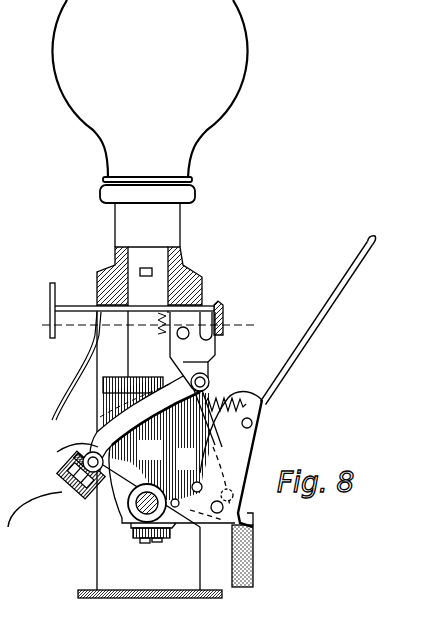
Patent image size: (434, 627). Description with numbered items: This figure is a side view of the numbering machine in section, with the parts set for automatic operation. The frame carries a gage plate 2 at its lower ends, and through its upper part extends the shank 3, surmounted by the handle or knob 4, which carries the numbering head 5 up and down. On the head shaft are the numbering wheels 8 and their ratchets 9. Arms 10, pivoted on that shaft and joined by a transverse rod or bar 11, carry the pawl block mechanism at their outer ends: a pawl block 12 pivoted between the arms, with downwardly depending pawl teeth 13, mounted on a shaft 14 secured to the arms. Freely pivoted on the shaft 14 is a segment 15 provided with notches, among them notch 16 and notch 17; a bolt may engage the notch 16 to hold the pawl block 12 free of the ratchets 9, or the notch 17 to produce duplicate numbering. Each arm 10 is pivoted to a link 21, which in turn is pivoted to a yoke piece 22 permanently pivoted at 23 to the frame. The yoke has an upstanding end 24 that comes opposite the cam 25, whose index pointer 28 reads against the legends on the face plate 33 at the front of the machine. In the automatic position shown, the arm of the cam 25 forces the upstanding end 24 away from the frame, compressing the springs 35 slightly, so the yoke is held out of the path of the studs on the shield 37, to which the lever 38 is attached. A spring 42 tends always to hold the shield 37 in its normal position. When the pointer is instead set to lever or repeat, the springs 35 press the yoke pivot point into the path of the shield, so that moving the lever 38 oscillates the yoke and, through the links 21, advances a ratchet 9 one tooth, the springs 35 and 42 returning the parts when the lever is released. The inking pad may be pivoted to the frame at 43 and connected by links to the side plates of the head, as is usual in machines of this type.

The gage plate 2 is at (104, 598).
The shank 3 is at (149, 312).
The handle or knob 4 is at (149, 123).
The numbering head 5 is at (165, 475).
The numbering wheels 8 is at (141, 543).
The ratchets 9 is at (155, 542).
The arms 10 is at (108, 530).
The transverse rod or bar 11 is at (92, 437).
The pawl block 12 is at (31, 523).
The pawl teeth 13 is at (100, 493).
The shaft 14 is at (71, 451).
The segment 15 is at (65, 480).
The notch 16 is at (60, 460).
The notch 17 is at (80, 495).
The link 21 is at (150, 400).
The yoke piece 22 is at (215, 352).
The pivot 23 is at (186, 329).
The upstanding end 24 is at (222, 307).
The cam 25 is at (95, 306).
The index pointer 28 is at (50, 338).
The face plate 33 is at (53, 421).
The springs 35 is at (163, 333).
The shield 37 is at (233, 452).
The lever 38 is at (300, 347).
The spring 42 is at (244, 406).
The pivot 43 is at (247, 490).